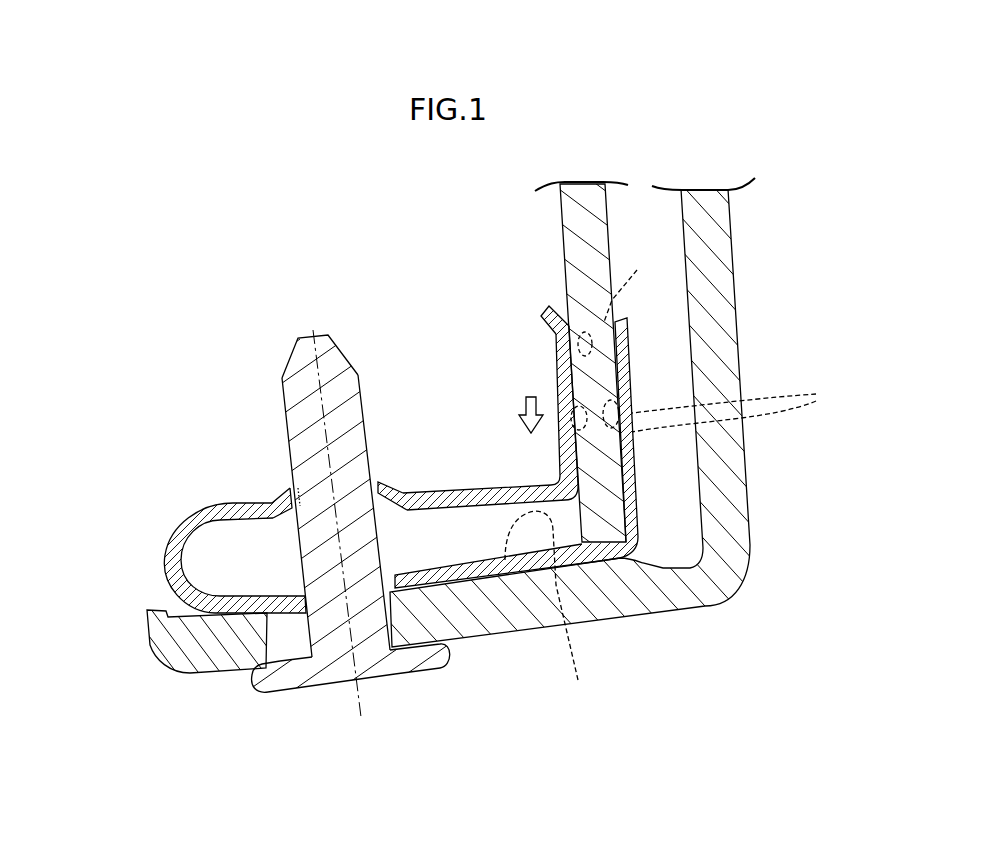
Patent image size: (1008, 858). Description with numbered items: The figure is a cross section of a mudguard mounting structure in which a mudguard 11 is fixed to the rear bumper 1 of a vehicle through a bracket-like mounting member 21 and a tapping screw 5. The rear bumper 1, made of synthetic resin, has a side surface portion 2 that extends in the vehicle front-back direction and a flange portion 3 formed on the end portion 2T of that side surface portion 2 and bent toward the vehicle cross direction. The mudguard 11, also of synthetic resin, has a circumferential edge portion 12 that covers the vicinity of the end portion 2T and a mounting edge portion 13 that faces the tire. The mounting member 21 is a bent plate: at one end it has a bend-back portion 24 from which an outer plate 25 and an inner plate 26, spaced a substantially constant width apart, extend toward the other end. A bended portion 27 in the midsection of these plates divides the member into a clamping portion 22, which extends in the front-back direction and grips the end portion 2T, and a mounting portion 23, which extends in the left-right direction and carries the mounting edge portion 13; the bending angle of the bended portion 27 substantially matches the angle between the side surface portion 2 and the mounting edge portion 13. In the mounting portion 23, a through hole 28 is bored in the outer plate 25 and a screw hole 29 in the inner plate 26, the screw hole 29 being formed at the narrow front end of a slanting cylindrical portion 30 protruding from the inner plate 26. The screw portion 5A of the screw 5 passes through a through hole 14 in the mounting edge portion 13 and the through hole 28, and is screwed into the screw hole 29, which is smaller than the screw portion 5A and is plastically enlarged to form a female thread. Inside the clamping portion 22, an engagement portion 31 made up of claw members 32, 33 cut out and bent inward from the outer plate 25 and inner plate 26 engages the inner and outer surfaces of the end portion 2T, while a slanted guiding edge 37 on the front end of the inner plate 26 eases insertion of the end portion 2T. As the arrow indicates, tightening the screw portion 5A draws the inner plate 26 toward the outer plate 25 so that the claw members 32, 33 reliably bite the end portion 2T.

The rear bumper 1 is at (608, 232).
The side surface portion 2 is at (577, 196).
The end portion 2T is at (600, 506).
The flange portion 3 is at (570, 609).
The screw 5 is at (339, 702).
The screw portion 5A is at (340, 347).
The mudguard 11 is at (735, 222).
The circumferential edge portion 12 is at (713, 266).
The mounting edge portion 13 is at (188, 673).
The through hole 14 is at (268, 665).
The mounting member 21 is at (212, 502).
The clamping portion 22 is at (553, 347).
The mounting portion 23 is at (445, 667).
The bend-back portion 24 is at (165, 556).
The outer plate 25 is at (468, 598).
The inner plate 26 is at (433, 487).
The bended portion 27 is at (675, 608).
The through hole 28 is at (275, 648).
The screw hole 29 is at (382, 486).
The slanting cylindrical portion 30 is at (278, 500).
The engagement portion 31 is at (636, 363).
The claw member 32 is at (611, 337).
The claw member 33 is at (737, 408).
The slanted guiding edge 37 is at (545, 312).